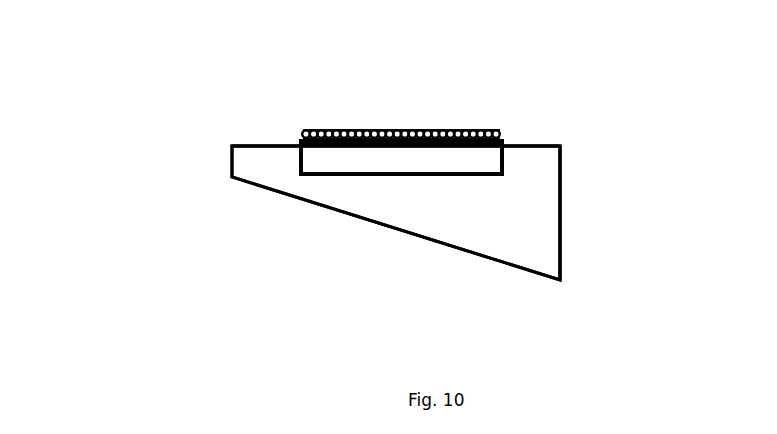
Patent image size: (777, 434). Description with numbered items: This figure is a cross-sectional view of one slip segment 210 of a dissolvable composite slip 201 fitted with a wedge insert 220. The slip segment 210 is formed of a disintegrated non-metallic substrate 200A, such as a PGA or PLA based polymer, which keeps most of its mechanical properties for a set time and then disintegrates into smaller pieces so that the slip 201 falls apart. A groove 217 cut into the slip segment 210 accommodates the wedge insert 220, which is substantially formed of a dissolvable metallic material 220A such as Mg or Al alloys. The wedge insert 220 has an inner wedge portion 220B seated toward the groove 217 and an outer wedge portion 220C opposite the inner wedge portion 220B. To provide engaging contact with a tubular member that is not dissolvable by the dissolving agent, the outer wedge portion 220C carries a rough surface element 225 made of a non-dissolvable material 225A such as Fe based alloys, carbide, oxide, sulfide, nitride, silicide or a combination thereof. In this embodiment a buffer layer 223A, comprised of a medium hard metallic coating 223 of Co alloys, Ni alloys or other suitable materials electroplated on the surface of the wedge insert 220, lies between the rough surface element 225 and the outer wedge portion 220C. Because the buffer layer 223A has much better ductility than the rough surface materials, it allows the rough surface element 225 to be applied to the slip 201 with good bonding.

The dissolvable composite slip 201 is at (143, 182).
The slip segment 210 is at (548, 252).
The disintegrated non-metallic substrate 200A is at (545, 205).
The groove 217 is at (455, 173).
The wedge insert 220 is at (332, 162).
The dissolvable metallic material 220A is at (318, 160).
The inner wedge portion 220B is at (310, 176).
The outer wedge portion 220C is at (303, 140).
The metallic coating 223 is at (502, 142).
The buffer layer 223A is at (497, 128).
The rough surface element 225 is at (303, 131).
The non-dissolvable material 225A is at (380, 130).